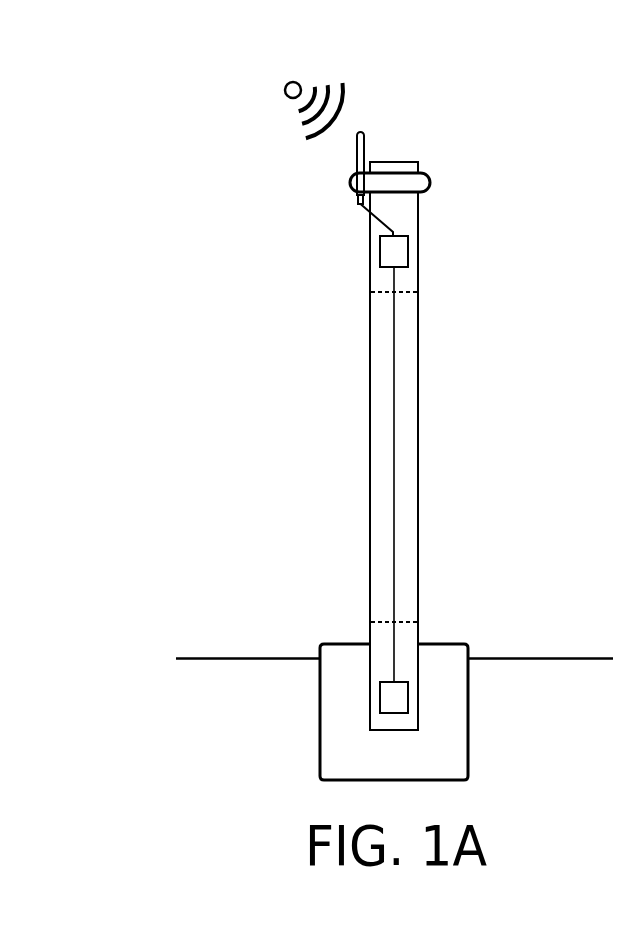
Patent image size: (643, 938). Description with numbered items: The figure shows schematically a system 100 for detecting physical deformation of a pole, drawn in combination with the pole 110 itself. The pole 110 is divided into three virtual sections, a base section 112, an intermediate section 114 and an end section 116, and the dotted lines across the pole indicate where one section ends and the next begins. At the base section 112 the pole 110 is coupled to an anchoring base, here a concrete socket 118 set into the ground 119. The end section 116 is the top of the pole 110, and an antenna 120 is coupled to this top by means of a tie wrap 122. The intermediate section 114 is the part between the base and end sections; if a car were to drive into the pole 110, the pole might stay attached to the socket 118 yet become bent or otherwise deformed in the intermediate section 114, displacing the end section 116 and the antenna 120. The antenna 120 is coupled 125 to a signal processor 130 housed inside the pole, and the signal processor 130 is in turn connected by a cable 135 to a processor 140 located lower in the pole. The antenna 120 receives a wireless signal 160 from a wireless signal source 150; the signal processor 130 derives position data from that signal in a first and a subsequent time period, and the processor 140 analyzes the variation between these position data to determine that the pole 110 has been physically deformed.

The system for detecting physical deformation of a pole 100 is at (549, 156).
The pole 110 is at (393, 161).
The base section 112 is at (413, 633).
The intermediate section 114 is at (415, 457).
The end section 116 is at (412, 210).
The socket 118 is at (468, 712).
The ground 119 is at (540, 658).
The antenna 120 is at (356, 148).
The tie wrap 122 is at (429, 182).
The coupling 125 is at (370, 218).
The signal processor 130 is at (405, 260).
The cable 135 is at (393, 410).
The processor 140 is at (386, 697).
The wireless signal source 150 is at (285, 92).
The wireless signal 160 is at (337, 90).